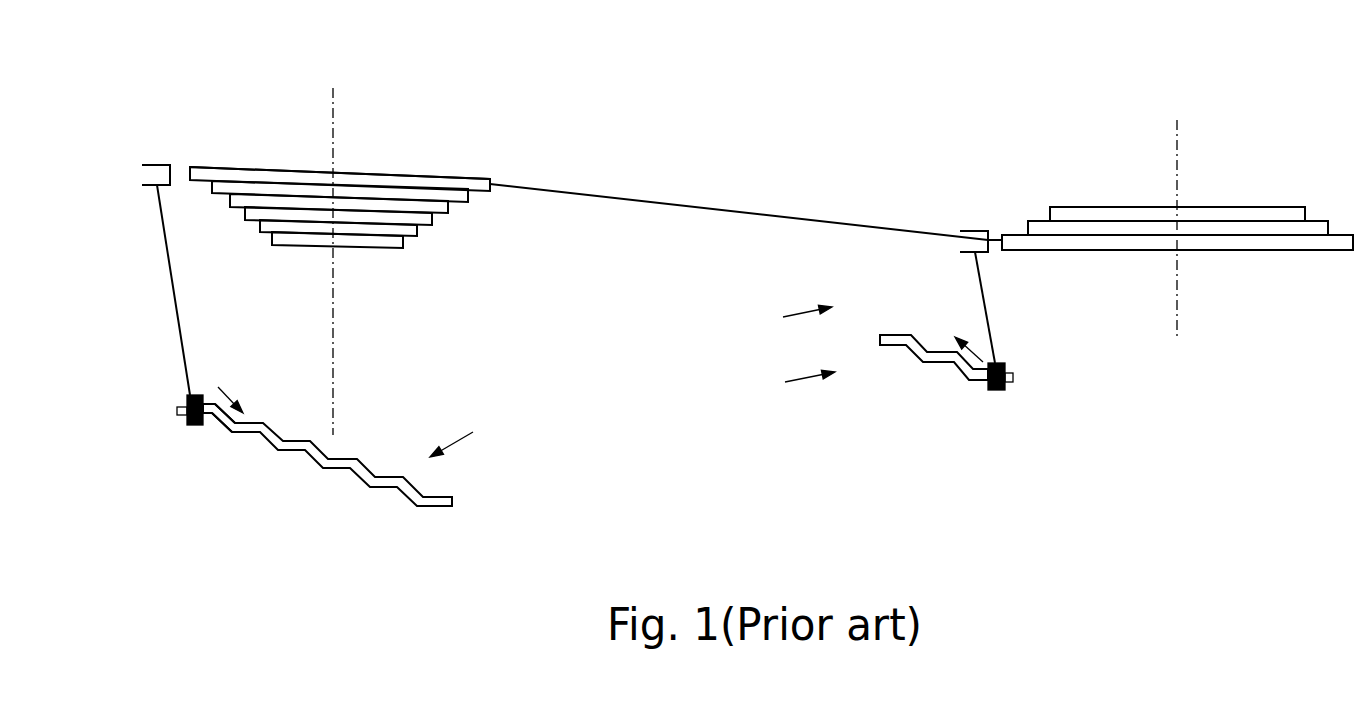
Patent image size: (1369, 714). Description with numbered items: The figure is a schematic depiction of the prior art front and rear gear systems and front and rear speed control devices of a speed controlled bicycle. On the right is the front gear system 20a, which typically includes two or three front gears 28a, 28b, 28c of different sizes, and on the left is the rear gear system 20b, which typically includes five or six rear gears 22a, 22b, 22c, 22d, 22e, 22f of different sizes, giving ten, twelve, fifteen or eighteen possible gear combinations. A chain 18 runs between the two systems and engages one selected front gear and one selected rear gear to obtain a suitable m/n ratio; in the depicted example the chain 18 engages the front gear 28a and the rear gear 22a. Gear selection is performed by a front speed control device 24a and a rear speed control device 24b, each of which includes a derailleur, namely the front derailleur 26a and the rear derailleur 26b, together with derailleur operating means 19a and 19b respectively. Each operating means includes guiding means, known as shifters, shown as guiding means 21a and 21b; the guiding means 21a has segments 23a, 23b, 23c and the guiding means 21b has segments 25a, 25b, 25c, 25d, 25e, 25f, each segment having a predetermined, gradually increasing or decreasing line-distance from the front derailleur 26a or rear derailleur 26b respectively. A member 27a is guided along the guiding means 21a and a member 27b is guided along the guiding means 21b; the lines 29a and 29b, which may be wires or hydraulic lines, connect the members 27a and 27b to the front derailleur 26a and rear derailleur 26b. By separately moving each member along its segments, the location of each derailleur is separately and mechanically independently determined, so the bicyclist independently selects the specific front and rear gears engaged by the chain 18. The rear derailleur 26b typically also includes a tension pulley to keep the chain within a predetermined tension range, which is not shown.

The chain 18 is at (758, 214).
The derailleur operating means 19a is at (785, 390).
The derailleur operating means 19b is at (477, 429).
The front gear system 20a is at (1329, 278).
The rear gear system 20b is at (530, 324).
The guiding means 21a is at (923, 347).
The guiding means 21b is at (297, 440).
The rear gear 22a is at (222, 178).
The rear gear 22b is at (258, 190).
The rear gear 22c is at (278, 203).
The rear gear 22d is at (322, 213).
The rear gear 22e is at (375, 230).
The rear gear 22f is at (393, 248).
The segment 23a is at (895, 342).
The segment 23b is at (947, 357).
The segment 23c is at (977, 383).
The front speed control device 24a is at (782, 319).
The rear speed control device 24b is at (273, 364).
The segment 25a is at (216, 420).
The segment 25b is at (252, 435).
The segment 25c is at (295, 452).
The segment 25d is at (340, 475).
The segment 25e is at (390, 490).
The segment 25f is at (440, 508).
The front derailleur 26a is at (968, 252).
The rear derailleur 26b is at (152, 173).
The member 27a is at (193, 426).
The member 27b is at (998, 392).
The front gear 28a is at (1347, 237).
The front gear 28b is at (1198, 213).
The front gear 28c is at (1092, 210).
The line 29a is at (990, 318).
The line 29b is at (176, 306).